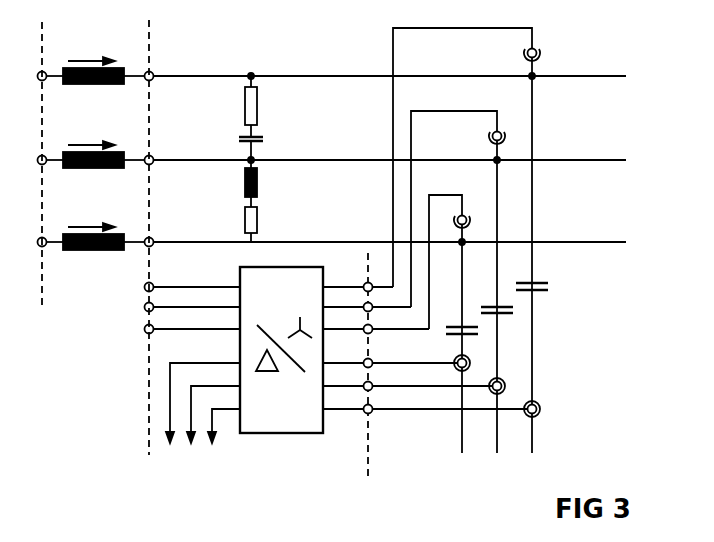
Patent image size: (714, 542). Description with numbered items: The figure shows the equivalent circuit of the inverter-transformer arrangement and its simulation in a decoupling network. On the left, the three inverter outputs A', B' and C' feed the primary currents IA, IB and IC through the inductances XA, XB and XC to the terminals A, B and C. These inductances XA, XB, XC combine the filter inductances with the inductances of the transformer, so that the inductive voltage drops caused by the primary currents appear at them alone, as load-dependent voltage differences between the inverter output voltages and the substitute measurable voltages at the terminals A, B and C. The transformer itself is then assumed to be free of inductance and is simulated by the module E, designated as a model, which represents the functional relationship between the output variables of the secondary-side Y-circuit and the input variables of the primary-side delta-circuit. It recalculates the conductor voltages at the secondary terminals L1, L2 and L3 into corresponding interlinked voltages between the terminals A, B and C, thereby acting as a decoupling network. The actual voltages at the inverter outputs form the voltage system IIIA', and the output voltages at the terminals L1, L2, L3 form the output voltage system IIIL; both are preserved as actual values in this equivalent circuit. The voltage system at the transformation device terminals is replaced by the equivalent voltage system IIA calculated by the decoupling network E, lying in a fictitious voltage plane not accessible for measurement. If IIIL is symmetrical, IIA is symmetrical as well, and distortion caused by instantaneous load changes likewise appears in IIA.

The inverter output A' is at (33, 76).
The inverter output B' is at (33, 160).
The inverter output C' is at (33, 242).
The model terminal A is at (158, 65).
The model terminal B is at (157, 149).
The model terminal C is at (157, 231).
The primary current IA is at (91, 50).
The primary current IB is at (91, 134).
The primary current IC is at (91, 216).
The inductance XA is at (96, 85).
The inductance XB is at (96, 169).
The inductance XC is at (96, 251).
The terminal L1 is at (539, 50).
The terminal L2 is at (502, 132).
The terminal L3 is at (467, 216).
The module E is at (272, 434).
The equivalent voltage system IIA is at (151, 258).
The output voltage system IIIL is at (368, 381).
The voltage system IIIA' is at (53, 155).